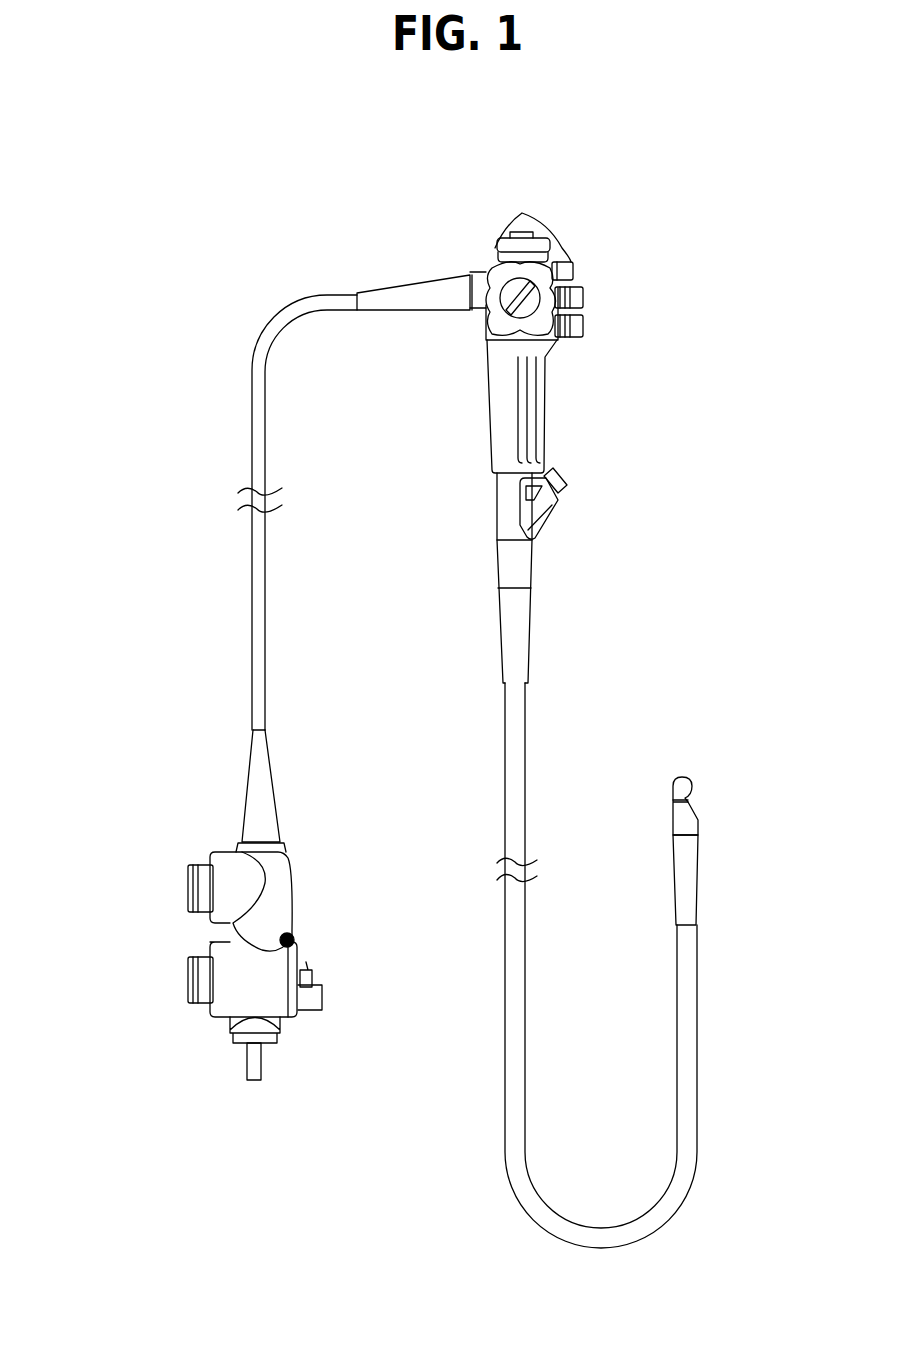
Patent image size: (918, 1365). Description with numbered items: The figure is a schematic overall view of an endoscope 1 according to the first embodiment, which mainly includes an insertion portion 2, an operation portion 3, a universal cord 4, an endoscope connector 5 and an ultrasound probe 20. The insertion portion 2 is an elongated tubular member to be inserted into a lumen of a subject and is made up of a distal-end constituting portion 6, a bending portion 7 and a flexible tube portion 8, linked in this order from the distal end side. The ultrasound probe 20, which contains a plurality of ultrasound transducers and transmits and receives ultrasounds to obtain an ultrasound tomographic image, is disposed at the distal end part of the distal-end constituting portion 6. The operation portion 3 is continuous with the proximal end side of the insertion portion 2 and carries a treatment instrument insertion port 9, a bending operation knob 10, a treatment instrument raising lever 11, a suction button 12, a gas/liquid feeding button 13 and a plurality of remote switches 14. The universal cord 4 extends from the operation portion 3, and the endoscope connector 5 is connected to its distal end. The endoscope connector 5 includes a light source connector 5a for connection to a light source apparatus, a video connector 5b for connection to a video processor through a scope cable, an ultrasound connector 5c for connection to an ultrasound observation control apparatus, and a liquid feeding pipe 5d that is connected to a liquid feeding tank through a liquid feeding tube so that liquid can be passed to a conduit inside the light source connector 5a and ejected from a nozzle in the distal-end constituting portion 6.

The endoscope 1 is at (387, 172).
The insertion portion 2 is at (484, 1005).
The operation portion 3 is at (466, 397).
The universal cord 4 is at (250, 430).
The endoscope connector 5 is at (119, 935).
The light source connector 5a is at (252, 1082).
The video connector 5b is at (188, 980).
The ultrasound connector 5c is at (188, 888).
The liquid feeding pipe 5d is at (322, 983).
The distal-end constituting portion 6 is at (700, 828).
The bending portion 7 is at (700, 895).
The flexible tube portion 8 is at (697, 1110).
The treatment instrument insertion port 9 is at (560, 476).
The bending operation knob 10 is at (502, 328).
The treatment instrument raising lever 11 is at (575, 268).
The suction button 12 is at (585, 298).
The gas/liquid feeding button 13 is at (587, 325).
The remote switches 14 is at (522, 232).
The ultrasound probe 20 is at (684, 775).